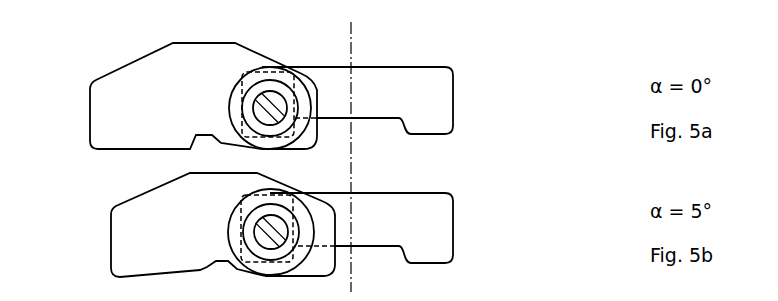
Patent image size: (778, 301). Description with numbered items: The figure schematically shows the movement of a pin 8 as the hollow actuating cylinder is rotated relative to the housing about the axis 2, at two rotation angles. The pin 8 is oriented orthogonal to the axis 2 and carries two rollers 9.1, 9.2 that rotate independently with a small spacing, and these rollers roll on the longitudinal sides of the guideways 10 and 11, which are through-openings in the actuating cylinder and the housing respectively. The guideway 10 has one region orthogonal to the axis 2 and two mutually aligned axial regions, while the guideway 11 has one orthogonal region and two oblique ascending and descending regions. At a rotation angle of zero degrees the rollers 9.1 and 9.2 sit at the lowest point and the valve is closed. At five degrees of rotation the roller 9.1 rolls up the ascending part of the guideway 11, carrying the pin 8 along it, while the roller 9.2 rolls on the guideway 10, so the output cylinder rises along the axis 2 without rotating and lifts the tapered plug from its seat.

The axis 2 is at (346, 47).
The pin 8 is at (270, 108).
The roller 9.1 is at (275, 140).
The roller 9.2 is at (257, 90).
The guideway 10 is at (369, 118).
The guideway 11 is at (135, 148).